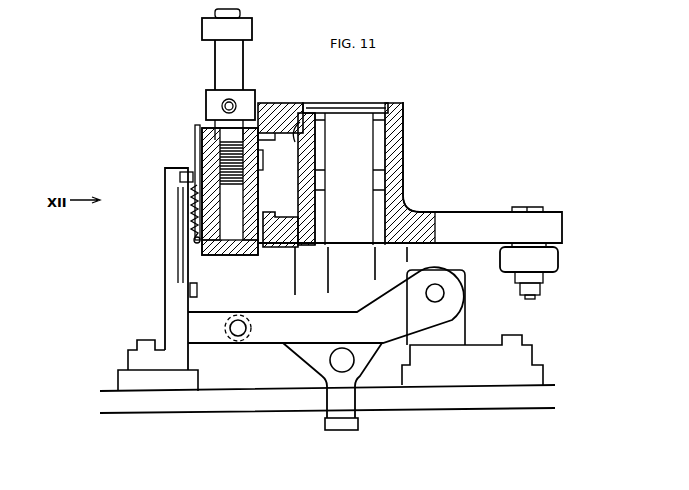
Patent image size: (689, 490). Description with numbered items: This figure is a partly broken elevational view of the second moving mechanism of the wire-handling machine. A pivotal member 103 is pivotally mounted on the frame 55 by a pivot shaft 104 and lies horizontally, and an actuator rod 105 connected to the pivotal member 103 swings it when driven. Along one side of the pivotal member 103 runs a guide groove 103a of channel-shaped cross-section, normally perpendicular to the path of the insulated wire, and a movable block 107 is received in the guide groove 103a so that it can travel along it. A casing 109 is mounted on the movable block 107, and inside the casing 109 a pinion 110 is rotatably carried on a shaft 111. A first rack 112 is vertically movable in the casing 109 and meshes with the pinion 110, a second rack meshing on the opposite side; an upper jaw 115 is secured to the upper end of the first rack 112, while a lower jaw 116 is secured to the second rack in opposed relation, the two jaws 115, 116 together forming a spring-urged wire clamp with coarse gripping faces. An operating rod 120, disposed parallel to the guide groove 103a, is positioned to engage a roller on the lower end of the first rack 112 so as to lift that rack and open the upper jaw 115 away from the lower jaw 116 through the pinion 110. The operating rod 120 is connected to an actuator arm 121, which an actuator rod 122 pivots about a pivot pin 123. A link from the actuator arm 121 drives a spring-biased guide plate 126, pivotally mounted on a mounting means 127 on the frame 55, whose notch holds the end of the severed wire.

The frame 55 is at (530, 408).
The pivotal member 103 is at (405, 165).
The guide groove 103a is at (298, 110).
The pivot shaft 104 is at (363, 122).
The actuator rod 105 is at (559, 259).
The movable block 107 is at (287, 217).
The casing 109 is at (205, 220).
The pinion 110 is at (220, 130).
The shaft 111 is at (213, 160).
The first rack 112 is at (244, 56).
The upper jaw 115 is at (208, 30).
The lower jaw 116 is at (210, 98).
The operating rod 120 is at (238, 341).
The actuator arm 121 is at (340, 298).
The actuator rod 122 is at (357, 405).
The pivot pin 123 is at (445, 293).
The guide plate 126 is at (180, 177).
The mounting means 127 is at (178, 316).